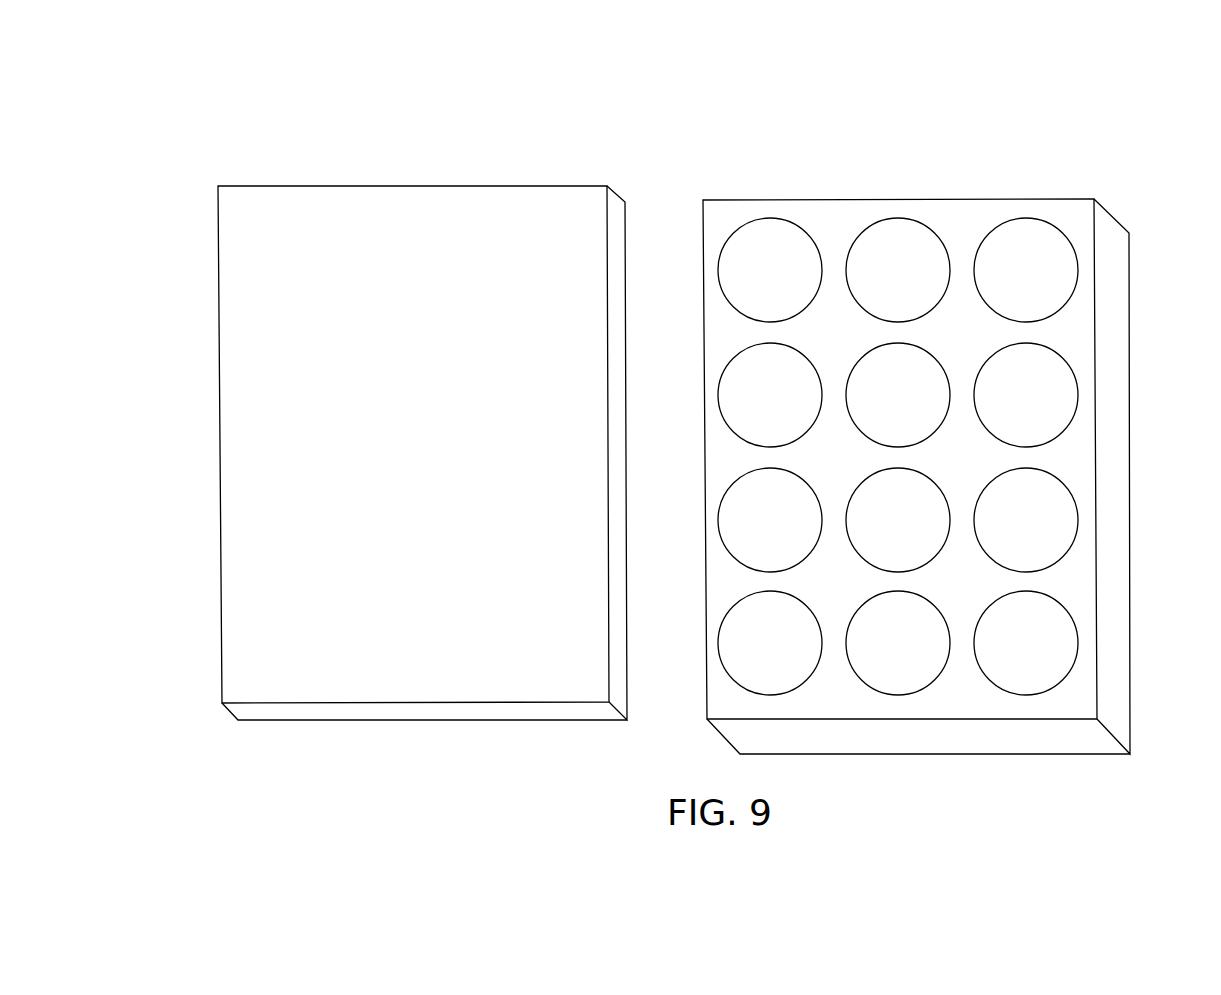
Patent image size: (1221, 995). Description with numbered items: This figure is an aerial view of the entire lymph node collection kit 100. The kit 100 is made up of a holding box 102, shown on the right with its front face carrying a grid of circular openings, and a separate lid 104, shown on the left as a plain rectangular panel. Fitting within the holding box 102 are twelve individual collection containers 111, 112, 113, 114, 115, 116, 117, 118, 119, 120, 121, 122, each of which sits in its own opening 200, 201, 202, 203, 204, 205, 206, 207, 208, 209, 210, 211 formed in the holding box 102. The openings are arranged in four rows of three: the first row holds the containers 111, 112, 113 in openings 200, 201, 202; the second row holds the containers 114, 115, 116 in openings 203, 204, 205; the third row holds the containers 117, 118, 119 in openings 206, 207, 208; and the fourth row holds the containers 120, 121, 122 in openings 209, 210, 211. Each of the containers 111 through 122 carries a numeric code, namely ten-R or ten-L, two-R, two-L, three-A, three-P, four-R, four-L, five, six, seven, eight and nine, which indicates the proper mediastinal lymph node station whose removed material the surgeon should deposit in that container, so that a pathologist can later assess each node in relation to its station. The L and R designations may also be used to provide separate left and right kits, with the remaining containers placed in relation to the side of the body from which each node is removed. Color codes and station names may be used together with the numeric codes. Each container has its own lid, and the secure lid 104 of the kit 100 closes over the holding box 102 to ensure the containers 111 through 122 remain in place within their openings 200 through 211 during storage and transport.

The kit 100 is at (921, 452).
The holding box 102 is at (1108, 210).
The lid 104 is at (527, 186).
The collection container 111 is at (767, 232).
The collection container 112 is at (902, 240).
The collection container 113 is at (1055, 282).
The collection container 114 is at (730, 398).
The collection container 115 is at (937, 365).
The collection container 116 is at (1055, 407).
The collection container 117 is at (730, 522).
The collection container 118 is at (937, 490).
The collection container 119 is at (1055, 532).
The collection container 120 is at (730, 646).
The collection container 121 is at (903, 673).
The collection container 122 is at (1058, 655).
The opening 200 is at (733, 240).
The opening 201 is at (884, 240).
The opening 202 is at (1080, 270).
The opening 203 is at (733, 395).
The opening 204 is at (915, 398).
The opening 205 is at (1080, 395).
The opening 206 is at (733, 520).
The opening 207 is at (915, 524).
The opening 208 is at (1080, 520).
The opening 209 is at (733, 643).
The opening 210 is at (890, 691).
The opening 211 is at (1081, 643).